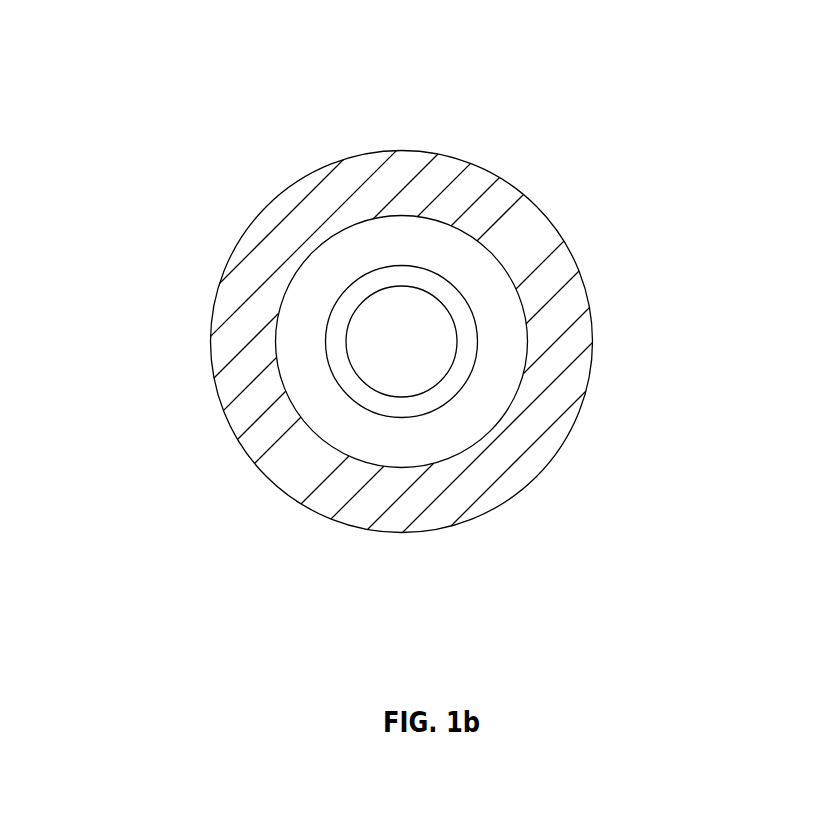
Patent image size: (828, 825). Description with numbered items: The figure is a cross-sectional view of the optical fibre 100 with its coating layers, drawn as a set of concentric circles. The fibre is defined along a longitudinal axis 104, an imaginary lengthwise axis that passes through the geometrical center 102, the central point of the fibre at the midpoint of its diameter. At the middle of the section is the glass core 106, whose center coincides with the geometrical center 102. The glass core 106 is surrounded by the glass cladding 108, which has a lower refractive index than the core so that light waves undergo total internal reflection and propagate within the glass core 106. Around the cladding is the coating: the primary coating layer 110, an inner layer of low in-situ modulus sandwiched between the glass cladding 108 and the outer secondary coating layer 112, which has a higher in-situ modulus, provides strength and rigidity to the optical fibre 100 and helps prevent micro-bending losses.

The optical fibre 100 is at (93, 60).
The geometrical center 102 is at (400, 338).
The longitudinal axis 104 is at (598, 145).
The glass core 106 is at (390, 305).
The glass cladding 108 is at (522, 175).
The primary coating layer 110 is at (427, 250).
The secondary coating layer 112 is at (412, 192).